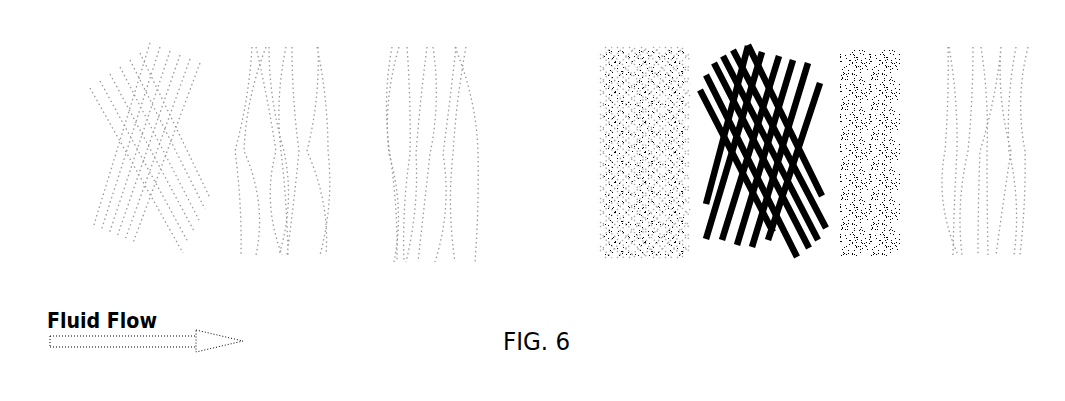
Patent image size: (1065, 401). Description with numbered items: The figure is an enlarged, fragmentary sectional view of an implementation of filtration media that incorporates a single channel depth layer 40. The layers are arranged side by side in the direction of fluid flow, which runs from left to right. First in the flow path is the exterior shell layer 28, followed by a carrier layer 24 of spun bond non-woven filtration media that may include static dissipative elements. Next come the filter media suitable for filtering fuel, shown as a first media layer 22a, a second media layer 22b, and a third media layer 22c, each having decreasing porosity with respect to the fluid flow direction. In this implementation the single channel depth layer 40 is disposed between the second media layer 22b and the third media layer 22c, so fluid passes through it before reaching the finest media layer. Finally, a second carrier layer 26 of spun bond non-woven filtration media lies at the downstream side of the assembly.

The exterior shell layer 28 is at (113, 253).
The carrier layer 24 is at (284, 276).
The first media layer 22a is at (420, 275).
The second media layer 22b is at (636, 276).
The single channel depth layer 40 is at (754, 31).
The third media layer 22c is at (863, 278).
The carrier layer 26 is at (988, 263).